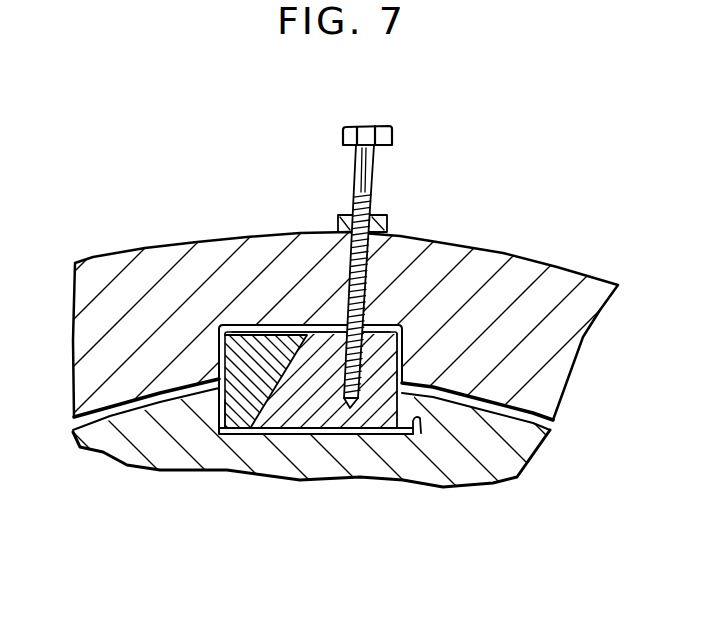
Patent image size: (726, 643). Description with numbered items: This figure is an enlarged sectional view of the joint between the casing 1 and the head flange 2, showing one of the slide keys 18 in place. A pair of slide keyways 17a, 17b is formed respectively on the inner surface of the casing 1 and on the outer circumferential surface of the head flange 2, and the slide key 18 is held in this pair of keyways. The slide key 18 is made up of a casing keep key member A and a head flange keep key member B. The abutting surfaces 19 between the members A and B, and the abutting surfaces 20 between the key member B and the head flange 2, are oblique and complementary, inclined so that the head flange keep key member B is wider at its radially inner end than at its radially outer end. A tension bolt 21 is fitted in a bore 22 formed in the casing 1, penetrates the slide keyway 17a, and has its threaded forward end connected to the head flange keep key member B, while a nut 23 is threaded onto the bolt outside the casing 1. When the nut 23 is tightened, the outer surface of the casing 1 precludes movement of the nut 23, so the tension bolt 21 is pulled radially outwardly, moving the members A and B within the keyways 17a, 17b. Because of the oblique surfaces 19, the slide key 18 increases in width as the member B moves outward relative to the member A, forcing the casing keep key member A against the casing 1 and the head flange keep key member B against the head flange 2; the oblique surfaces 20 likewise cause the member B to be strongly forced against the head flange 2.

The casing 1 is at (555, 277).
The head flange 2 is at (481, 470).
The slide keyway 17a is at (320, 323).
The slide keyway 17b is at (298, 433).
The slide key 18 is at (318, 324).
The abutting surfaces 19 is at (276, 418).
The abutting surfaces 20 is at (394, 435).
The tension bolt 21 is at (381, 267).
The bore 22 is at (367, 283).
The nut 23 is at (381, 219).
The casing keep key member A is at (237, 418).
The head flange keep key member B is at (373, 413).